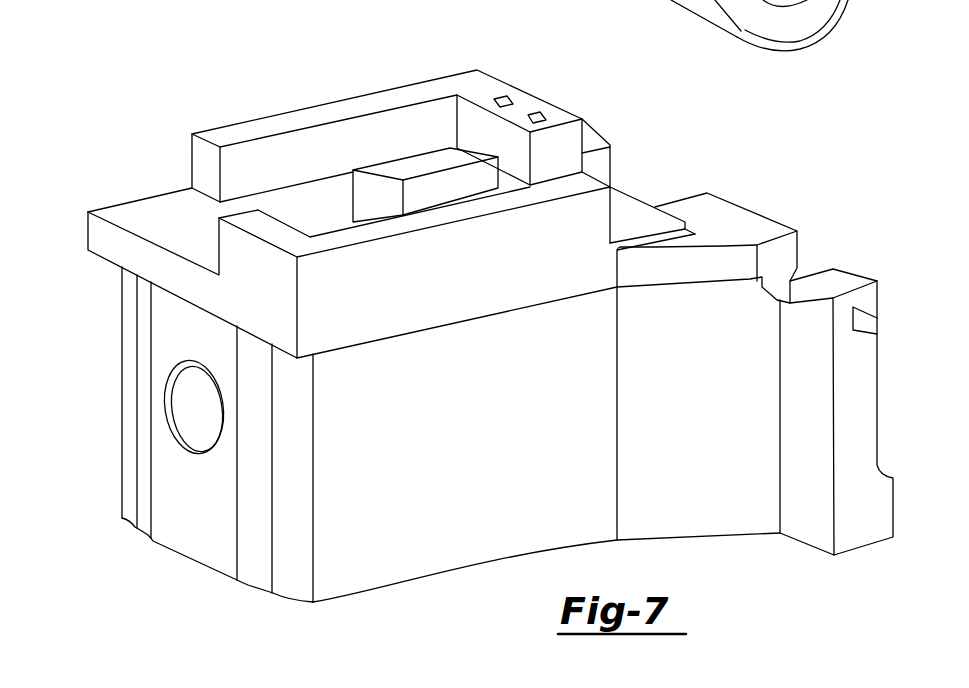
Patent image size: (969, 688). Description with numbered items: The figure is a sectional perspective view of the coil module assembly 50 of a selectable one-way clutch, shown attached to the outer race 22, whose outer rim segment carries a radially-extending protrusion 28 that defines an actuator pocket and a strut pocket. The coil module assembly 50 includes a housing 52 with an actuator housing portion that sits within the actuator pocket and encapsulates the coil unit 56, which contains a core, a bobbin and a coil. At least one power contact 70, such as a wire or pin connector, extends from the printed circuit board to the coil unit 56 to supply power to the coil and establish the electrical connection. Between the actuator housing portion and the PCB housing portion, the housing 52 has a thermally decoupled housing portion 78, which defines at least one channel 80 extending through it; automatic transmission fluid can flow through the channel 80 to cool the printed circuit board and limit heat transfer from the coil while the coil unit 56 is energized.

The outer race 22 is at (198, 546).
The radially-extending protrusion 28 is at (423, 557).
The coil module assembly 50 is at (738, 174).
The housing 52 is at (112, 242).
The coil unit 56 is at (845, 6).
The power contact 70 is at (541, 120).
The thermally decoupled housing portion 78 is at (497, 78).
The channel 80 is at (300, 200).